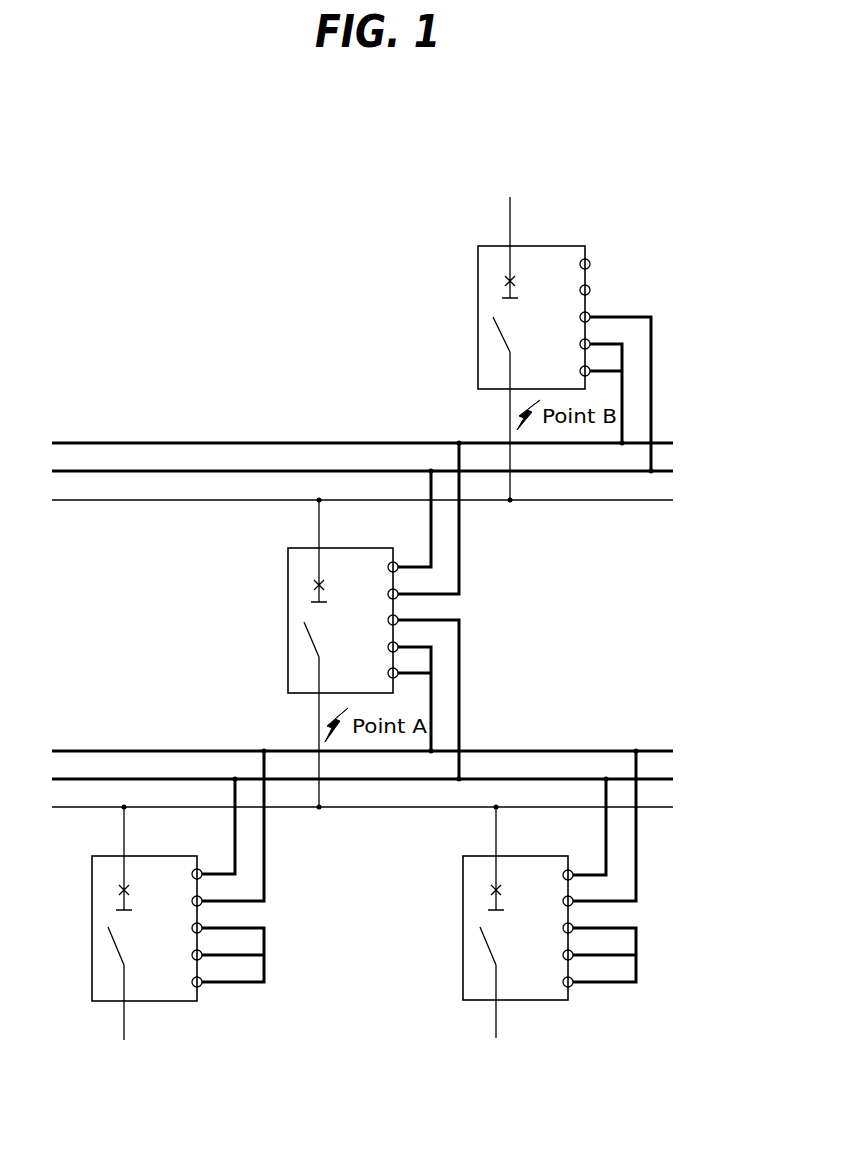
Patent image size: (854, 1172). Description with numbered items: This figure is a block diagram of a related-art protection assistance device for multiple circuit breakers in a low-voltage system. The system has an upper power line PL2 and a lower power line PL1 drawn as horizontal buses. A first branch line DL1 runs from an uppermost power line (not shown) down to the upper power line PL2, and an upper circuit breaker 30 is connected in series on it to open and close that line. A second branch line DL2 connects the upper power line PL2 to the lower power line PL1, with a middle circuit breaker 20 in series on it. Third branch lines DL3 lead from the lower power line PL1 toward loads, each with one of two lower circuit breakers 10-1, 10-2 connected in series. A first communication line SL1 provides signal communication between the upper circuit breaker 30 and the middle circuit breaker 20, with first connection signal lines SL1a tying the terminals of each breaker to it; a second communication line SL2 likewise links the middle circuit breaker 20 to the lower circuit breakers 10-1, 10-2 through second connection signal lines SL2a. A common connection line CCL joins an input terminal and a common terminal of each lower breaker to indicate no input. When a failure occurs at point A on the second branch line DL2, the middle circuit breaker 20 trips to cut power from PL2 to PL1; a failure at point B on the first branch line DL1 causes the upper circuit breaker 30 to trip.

The upper circuit breaker 30 is at (550, 246).
The middle circuit breaker 20 is at (288, 615).
The lower circuit breaker 10-1 is at (157, 1000).
The lower circuit breaker 10-2 is at (529, 1000).
The first branch line DL1 is at (508, 413).
The second branch line DL2 is at (318, 523).
The third branch line DL3 is at (122, 1020).
The first communication line SL1 is at (166, 471).
The second communication line SL2 is at (167, 779).
The first connection signal line SL1a is at (653, 378).
The second connection signal line SL2a is at (461, 685).
The lower power line PL1 is at (655, 808).
The upper power line PL2 is at (655, 501).
The common connection line CCL is at (266, 944).